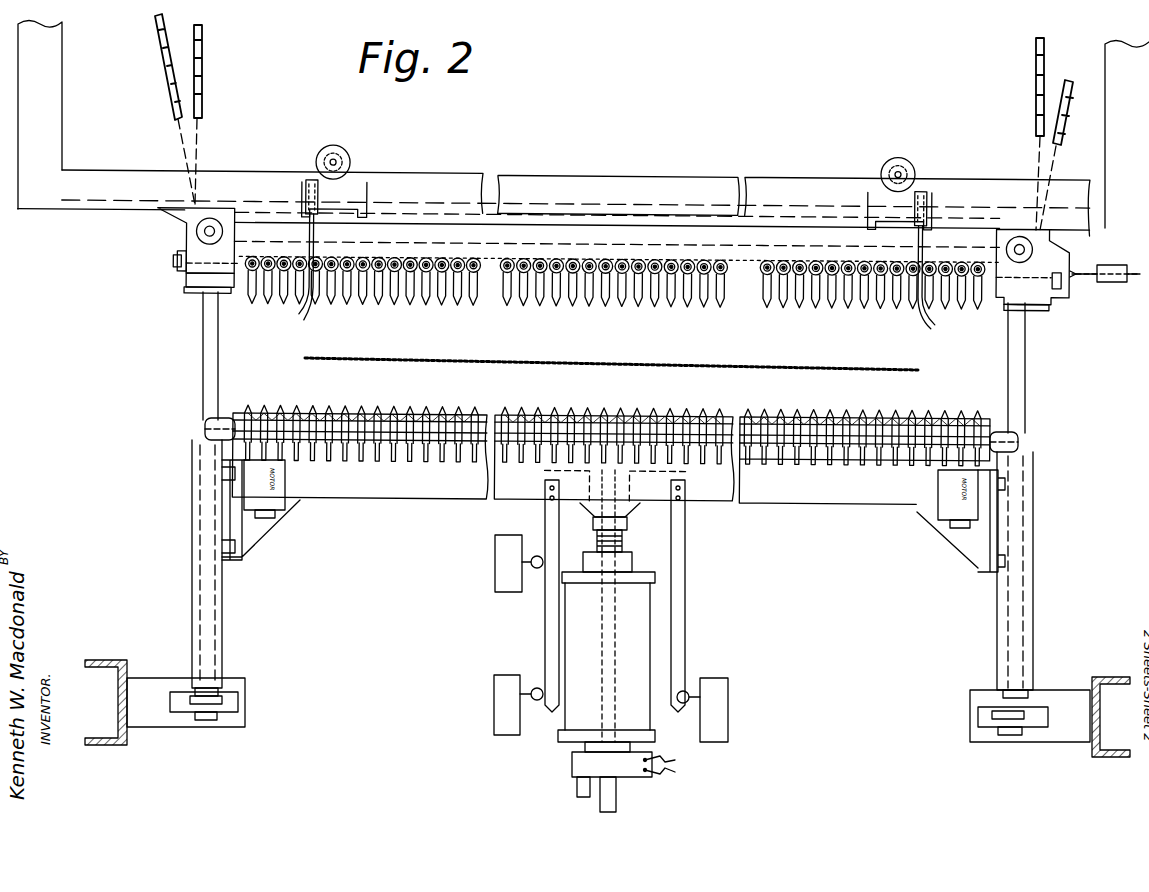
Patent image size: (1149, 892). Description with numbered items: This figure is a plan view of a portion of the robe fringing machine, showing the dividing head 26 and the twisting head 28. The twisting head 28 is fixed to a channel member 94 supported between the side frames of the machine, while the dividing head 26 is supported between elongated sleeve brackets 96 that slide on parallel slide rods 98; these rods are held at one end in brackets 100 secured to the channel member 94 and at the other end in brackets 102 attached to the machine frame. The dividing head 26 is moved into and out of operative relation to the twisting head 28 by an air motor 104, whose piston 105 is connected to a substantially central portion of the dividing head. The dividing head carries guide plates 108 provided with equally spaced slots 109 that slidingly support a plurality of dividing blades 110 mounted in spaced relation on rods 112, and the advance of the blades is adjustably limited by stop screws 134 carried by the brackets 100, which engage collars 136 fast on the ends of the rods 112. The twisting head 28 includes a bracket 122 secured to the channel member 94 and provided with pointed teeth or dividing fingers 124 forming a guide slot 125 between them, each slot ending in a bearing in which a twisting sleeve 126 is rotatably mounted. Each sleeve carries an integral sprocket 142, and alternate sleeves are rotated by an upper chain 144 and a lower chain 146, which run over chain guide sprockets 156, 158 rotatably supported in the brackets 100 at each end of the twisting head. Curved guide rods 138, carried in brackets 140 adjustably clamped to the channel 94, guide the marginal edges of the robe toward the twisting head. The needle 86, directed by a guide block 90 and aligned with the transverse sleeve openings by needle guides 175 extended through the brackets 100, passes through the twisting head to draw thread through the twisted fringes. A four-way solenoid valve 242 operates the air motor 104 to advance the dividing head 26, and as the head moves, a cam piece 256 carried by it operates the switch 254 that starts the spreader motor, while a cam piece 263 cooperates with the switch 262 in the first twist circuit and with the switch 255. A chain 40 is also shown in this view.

The dividing head 26 is at (397, 506).
The twisting head 28 is at (566, 168).
The chain 40 is at (884, 366).
The needle 86 is at (1080, 278).
The guide block 90 is at (1092, 266).
The channel member 94 is at (683, 185).
The sleeve brackets 96 is at (192, 588).
The slide rods 98 is at (205, 362).
The brackets 100 is at (190, 282).
The brackets 102 is at (200, 706).
The air motor 104 is at (640, 624).
The piston 105 is at (622, 540).
The guide plates 108 is at (430, 505).
The slots 109 is at (440, 458).
The dividing blades 110 is at (620, 413).
The rods 112 is at (384, 399).
The bracket 122 is at (632, 235).
The dividing fingers 124 is at (610, 300).
The guide slot 125 is at (725, 314).
The twisting sleeve 126 is at (348, 260).
The stop screws 134 is at (230, 296).
The collars 136 is at (212, 418).
The curved guide rods 138 is at (305, 315).
The brackets 140 is at (350, 160).
The sprocket 142 is at (420, 260).
The upper chain 144 is at (168, 92).
The lower chain 146 is at (204, 70).
The chain guide sprocket 156 is at (200, 200).
The chain guide sprocket 158 is at (1012, 222).
The needle guides 175 is at (178, 258).
The four-way solenoid valve 242 is at (572, 766).
The switch 254 is at (728, 710).
The switch 255 is at (494, 697).
The cam piece 256 is at (688, 660).
The switch 262 is at (497, 567).
The cam piece 263 is at (545, 633).